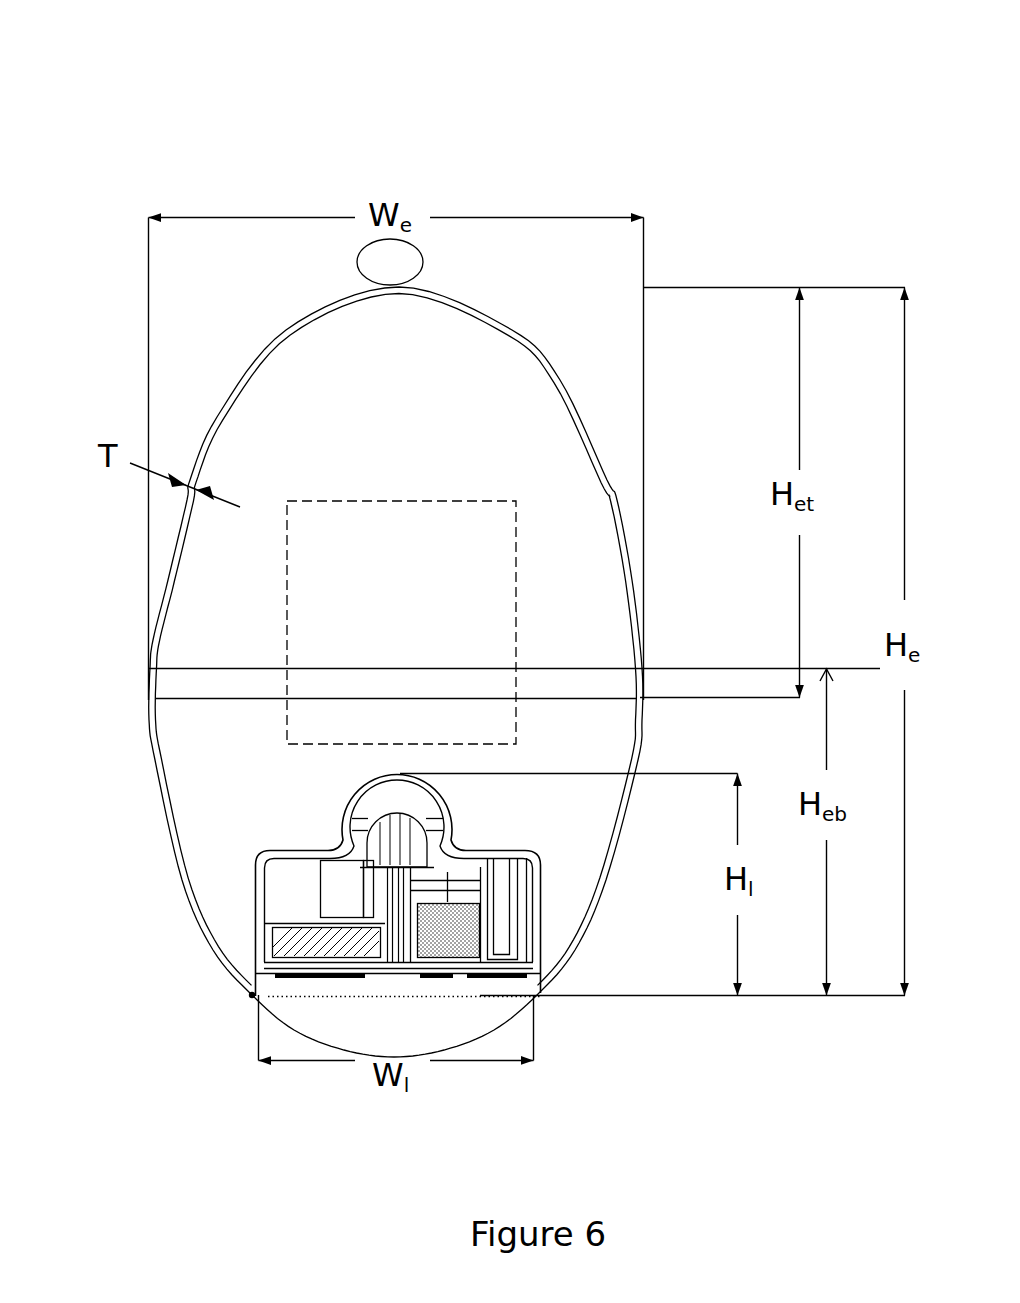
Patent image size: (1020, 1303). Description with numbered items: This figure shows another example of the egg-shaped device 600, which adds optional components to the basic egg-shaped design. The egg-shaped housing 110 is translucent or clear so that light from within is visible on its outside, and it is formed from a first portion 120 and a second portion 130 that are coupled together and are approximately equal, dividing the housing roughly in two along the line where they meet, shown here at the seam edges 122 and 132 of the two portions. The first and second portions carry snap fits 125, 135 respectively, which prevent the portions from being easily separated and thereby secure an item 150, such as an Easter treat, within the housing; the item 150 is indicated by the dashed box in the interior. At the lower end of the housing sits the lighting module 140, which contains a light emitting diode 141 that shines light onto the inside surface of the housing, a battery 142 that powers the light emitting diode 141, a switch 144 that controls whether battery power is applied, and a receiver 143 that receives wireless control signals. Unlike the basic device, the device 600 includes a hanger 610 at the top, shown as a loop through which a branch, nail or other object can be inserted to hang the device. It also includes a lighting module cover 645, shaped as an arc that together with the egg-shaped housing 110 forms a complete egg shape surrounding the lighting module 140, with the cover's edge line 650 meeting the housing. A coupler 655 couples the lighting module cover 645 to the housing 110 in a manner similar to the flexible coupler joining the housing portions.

The device 600 is at (205, 42).
The hanger 610 is at (359, 255).
The egg-shaped housing 110 is at (286, 330).
The first portion 120 is at (200, 575).
The upper portion lower edge 122 is at (243, 668).
The snap fit 125 is at (148, 668).
The snap fit 135 is at (150, 690).
The lower portion upper edge 132 is at (258, 700).
The second portion 130 is at (198, 830).
The item 150 is at (435, 500).
The lighting module 140 is at (250, 893).
The light emitting diode 141 is at (415, 830).
The receiver 143 is at (340, 885).
The battery 142 is at (320, 940).
The switch 144 is at (500, 920).
The coupler 655 is at (248, 994).
The base plane line 650 is at (540, 1000).
The lighting module cover 645 is at (510, 1022).